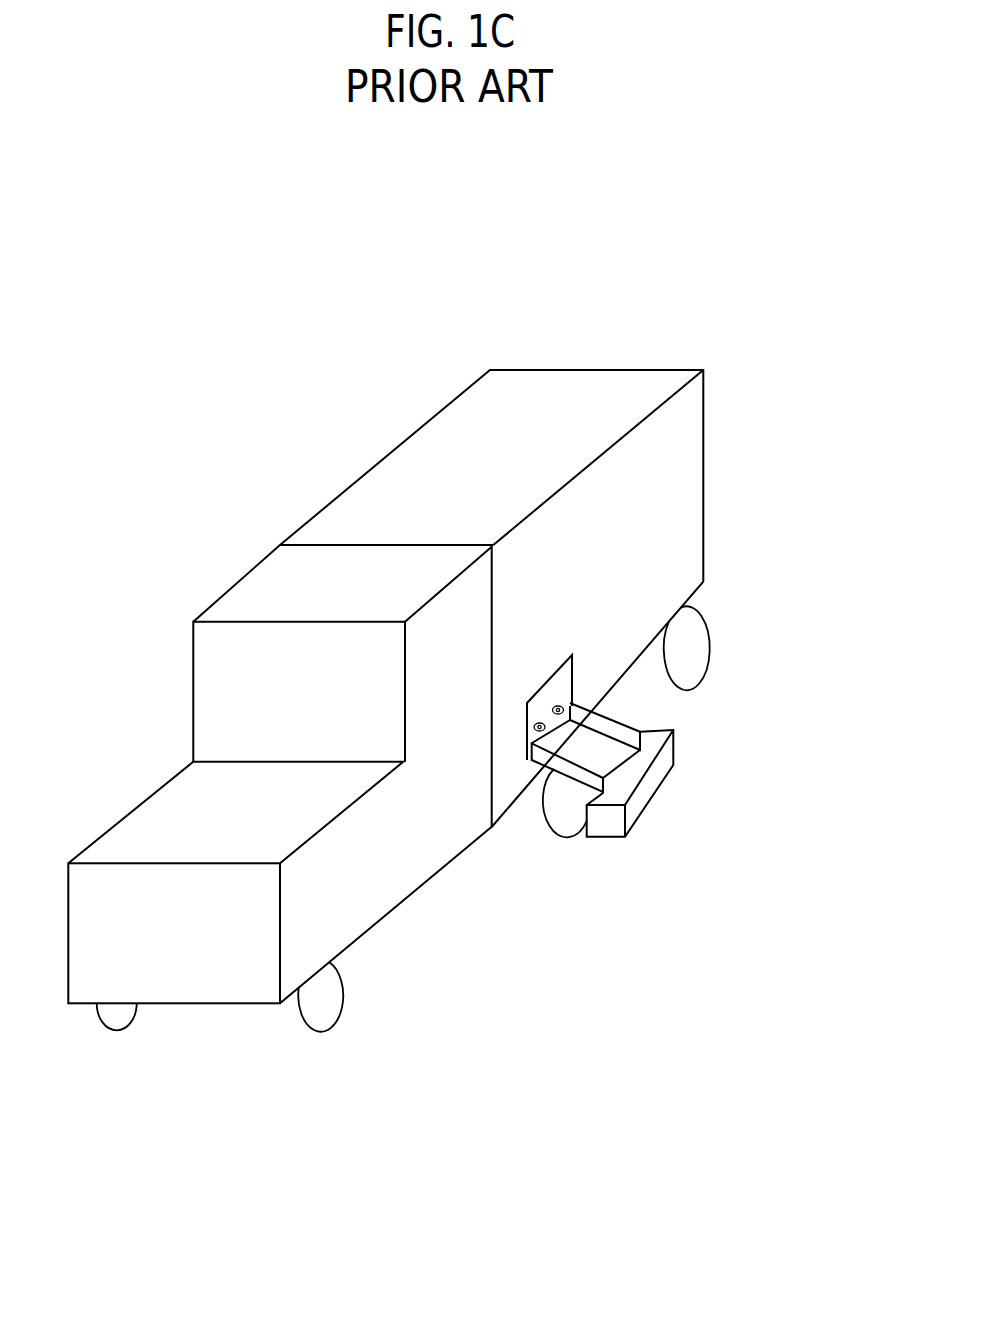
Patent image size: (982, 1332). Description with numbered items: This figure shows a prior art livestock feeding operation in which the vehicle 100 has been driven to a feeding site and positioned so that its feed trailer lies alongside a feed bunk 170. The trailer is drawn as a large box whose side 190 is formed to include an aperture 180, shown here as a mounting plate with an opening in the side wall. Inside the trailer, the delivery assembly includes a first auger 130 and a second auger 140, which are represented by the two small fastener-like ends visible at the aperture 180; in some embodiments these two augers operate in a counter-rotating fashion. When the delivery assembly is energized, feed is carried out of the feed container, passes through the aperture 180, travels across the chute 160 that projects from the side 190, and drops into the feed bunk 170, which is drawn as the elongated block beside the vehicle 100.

The vehicle 100 is at (438, 1135).
The first auger 130 is at (538, 723).
The second auger 140 is at (557, 706).
The chute 160 is at (586, 747).
The feed bunk 170 is at (662, 773).
The aperture 180 is at (567, 690).
The side 190 is at (667, 514).